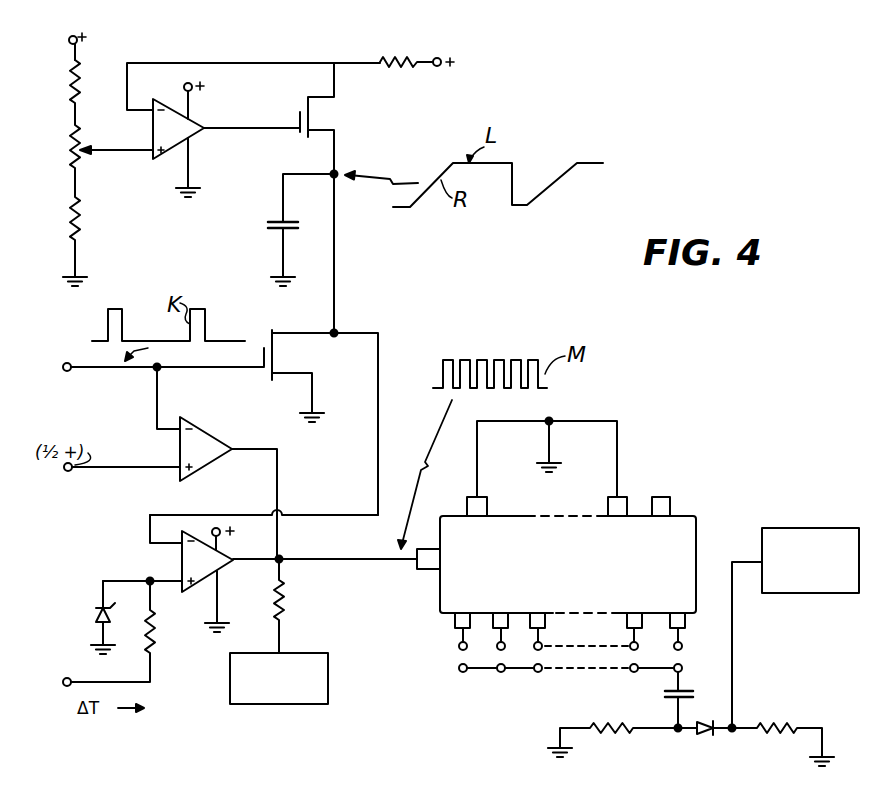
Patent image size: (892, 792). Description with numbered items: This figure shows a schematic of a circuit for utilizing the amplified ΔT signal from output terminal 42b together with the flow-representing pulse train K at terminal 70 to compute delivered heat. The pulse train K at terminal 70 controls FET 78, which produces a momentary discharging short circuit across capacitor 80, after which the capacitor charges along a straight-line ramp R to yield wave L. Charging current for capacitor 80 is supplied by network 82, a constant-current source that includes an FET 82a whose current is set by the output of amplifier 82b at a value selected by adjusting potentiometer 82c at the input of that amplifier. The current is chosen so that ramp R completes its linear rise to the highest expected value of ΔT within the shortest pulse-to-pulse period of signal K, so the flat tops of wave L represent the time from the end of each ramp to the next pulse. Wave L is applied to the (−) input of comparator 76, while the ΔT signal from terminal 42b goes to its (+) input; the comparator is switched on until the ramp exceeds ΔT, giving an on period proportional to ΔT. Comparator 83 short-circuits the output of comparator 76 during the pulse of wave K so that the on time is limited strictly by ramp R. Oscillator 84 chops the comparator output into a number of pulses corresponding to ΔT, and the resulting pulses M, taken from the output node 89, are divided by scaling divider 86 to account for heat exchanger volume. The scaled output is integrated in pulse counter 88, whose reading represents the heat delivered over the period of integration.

The network 82 is at (274, 112).
The FET 82a is at (322, 110).
The amplifier 82b is at (194, 136).
The potentiometer 82c is at (68, 152).
The capacitor 80 is at (268, 222).
The FET 78 is at (270, 332).
The terminal 70 is at (64, 366).
The comparator 83 is at (205, 437).
The comparator 76 is at (206, 583).
The output node 89 is at (284, 565).
The oscillator 84 is at (267, 697).
The scaling divider 86 is at (689, 516).
The pulse counter 88 is at (798, 578).
The output terminal 42b is at (78, 668).